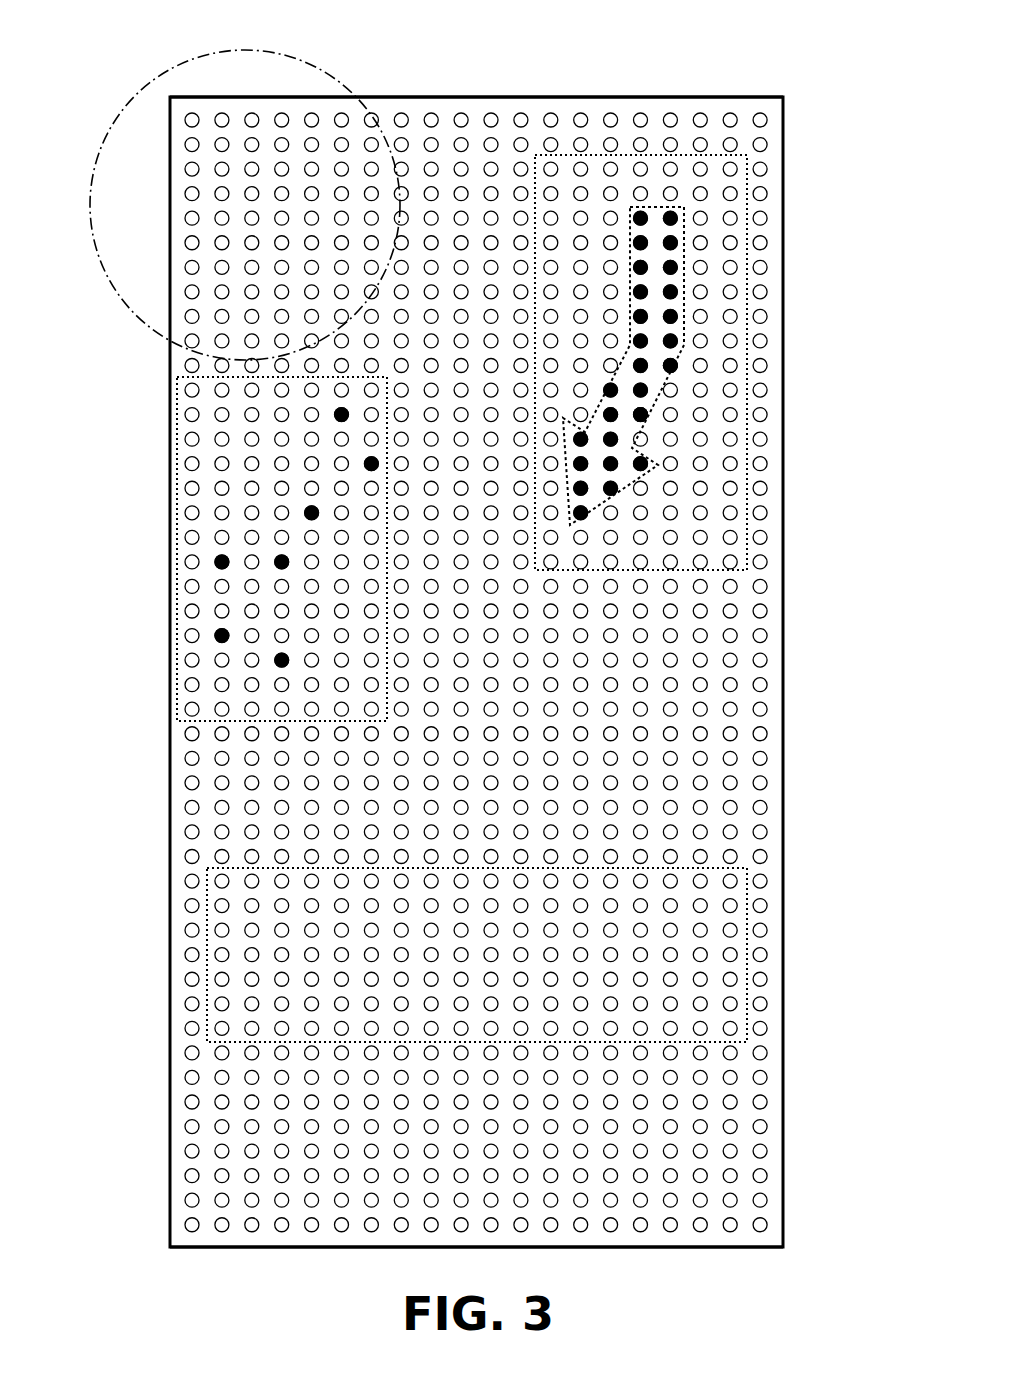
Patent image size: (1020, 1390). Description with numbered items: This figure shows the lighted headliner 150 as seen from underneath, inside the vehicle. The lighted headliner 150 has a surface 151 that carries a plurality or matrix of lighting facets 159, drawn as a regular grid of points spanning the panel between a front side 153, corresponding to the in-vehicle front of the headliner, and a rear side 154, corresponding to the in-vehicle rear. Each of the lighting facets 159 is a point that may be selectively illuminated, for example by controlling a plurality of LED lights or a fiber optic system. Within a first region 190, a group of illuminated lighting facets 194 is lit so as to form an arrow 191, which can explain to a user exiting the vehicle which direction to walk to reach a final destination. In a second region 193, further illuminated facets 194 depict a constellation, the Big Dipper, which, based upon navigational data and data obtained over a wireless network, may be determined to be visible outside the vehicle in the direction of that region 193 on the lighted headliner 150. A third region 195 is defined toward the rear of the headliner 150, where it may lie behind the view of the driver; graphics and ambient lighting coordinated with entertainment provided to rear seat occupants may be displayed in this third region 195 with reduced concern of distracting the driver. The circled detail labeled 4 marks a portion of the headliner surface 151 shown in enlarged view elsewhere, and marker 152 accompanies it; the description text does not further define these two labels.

The detail view circle 4 is at (212, 187).
The lighted headliner 150 is at (783, 350).
The surface 151 is at (203, 372).
The enlarged view circle 152 is at (134, 97).
The front side 153 is at (444, 97).
The rear side 154 is at (257, 1248).
The lighting facets 159 is at (766, 780).
The first region 190 is at (620, 155).
The arrow 191 is at (684, 235).
The second region 193 is at (213, 722).
The illuminated lighting facets 194 is at (216, 630).
The third region 195 is at (206, 970).